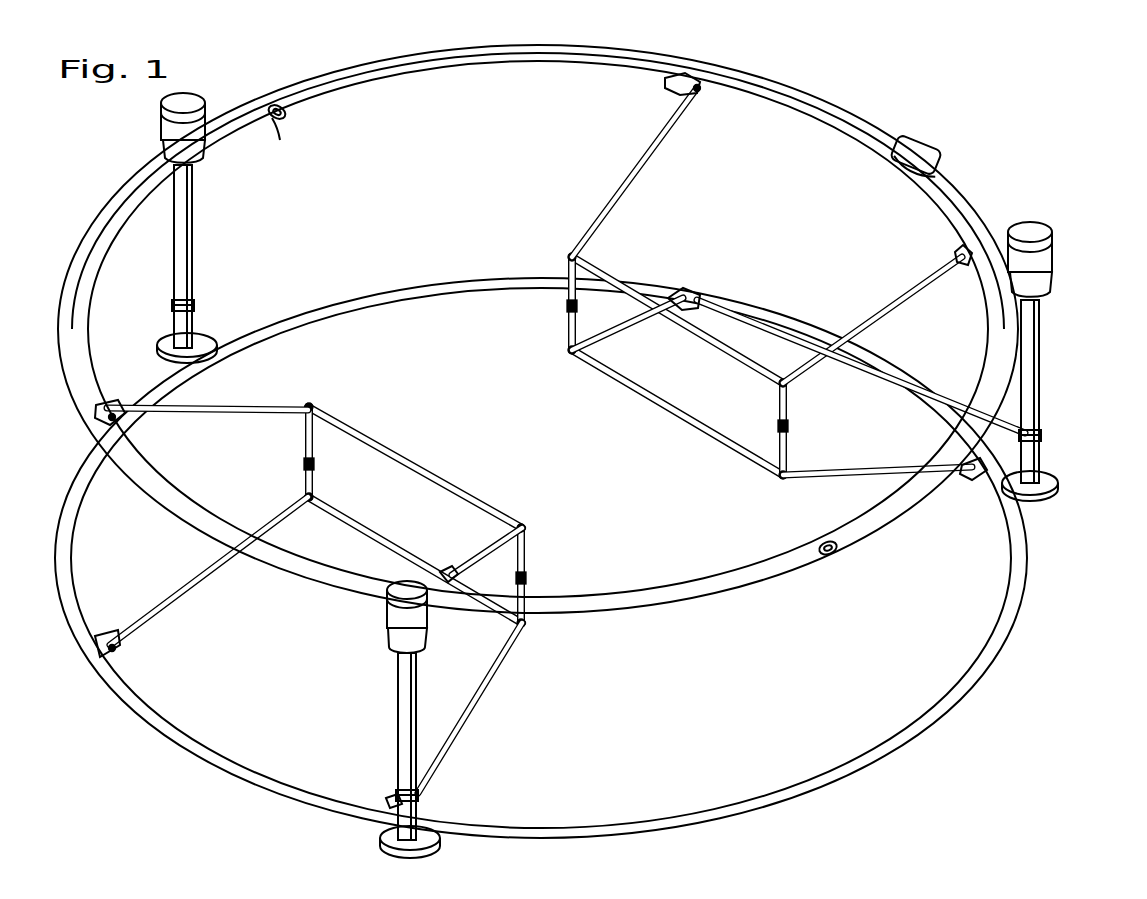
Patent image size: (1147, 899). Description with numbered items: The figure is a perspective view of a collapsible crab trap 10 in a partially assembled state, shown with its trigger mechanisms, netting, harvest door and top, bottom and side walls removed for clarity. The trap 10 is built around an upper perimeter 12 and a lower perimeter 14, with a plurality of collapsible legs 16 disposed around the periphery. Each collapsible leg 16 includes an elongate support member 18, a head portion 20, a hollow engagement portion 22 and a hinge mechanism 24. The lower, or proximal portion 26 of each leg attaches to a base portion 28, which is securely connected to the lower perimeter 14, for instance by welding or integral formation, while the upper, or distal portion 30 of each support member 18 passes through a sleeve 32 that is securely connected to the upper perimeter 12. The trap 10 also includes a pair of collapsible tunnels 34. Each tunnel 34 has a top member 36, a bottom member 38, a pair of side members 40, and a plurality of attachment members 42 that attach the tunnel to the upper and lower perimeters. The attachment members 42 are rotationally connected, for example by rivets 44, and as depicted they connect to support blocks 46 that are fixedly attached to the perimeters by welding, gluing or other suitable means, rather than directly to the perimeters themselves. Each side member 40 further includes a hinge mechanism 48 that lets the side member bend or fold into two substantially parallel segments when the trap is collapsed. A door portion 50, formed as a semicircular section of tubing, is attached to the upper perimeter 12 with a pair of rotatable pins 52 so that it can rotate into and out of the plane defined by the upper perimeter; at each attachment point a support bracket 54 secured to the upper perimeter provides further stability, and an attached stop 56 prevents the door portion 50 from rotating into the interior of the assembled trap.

The collapsible crab trap 10 is at (884, 40).
The upper perimeter 12 is at (538, 306).
The lower perimeter 14 is at (430, 282).
The collapsible leg 16 is at (621, 466).
The elongate support member 18 is at (173, 256).
The head portion 20 is at (186, 100).
The hollow engagement portion 22 is at (208, 148).
The hinge mechanism 24 is at (174, 300).
The proximal portion 26 is at (173, 320).
The base portion 28 is at (200, 335).
The distal portion 30 is at (194, 200).
The sleeve 32 is at (160, 126).
The collapsible tunnel 34 is at (544, 440).
The top member 36 is at (727, 358).
The bottom member 38 is at (668, 402).
The side member 40 is at (566, 326).
The attachment member 42 is at (625, 178).
The rivet 44 is at (700, 95).
The support block 46 is at (666, 86).
The hinge mechanism 48 is at (578, 306).
The door portion 50 is at (542, 70).
The rotatable pin 52 is at (284, 116).
The support bracket 54 is at (279, 126).
The stop 56 is at (930, 148).